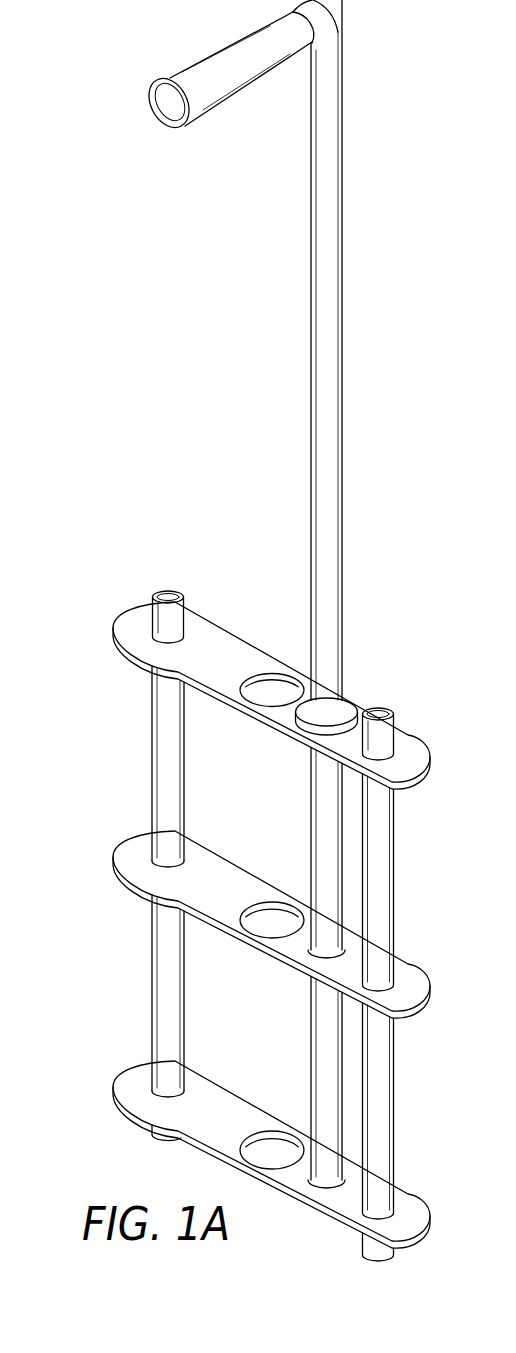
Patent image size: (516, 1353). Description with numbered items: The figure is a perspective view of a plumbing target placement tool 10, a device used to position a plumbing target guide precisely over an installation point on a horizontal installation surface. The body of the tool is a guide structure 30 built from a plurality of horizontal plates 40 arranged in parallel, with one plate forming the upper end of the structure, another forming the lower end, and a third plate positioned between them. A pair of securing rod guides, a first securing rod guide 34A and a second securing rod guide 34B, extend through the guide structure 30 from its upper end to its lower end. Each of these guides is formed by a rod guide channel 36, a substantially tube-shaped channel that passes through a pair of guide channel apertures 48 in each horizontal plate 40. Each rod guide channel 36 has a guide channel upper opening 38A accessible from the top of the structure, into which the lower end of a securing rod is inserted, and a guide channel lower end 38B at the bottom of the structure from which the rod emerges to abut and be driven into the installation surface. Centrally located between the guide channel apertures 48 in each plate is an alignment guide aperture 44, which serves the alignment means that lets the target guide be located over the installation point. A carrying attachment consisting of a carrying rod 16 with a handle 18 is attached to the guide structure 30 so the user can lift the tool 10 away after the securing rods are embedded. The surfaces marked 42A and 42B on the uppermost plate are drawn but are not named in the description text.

The plumbing target placement tool 10 is at (68, 747).
The carrying rod 16 is at (325, 533).
The handle 18 is at (207, 65).
The guide structure 30 is at (122, 603).
The first securing rod guide 34A is at (163, 620).
The second securing rod guide 34B is at (378, 755).
The rod guide channel 36 is at (152, 722).
The guide channel upper opening 38A is at (167, 588).
The guide channel lower end 38B is at (377, 717).
The horizontal plate 40 is at (205, 633).
The upper surface of plate 42A is at (232, 671).
The lower surface of plate 42B is at (254, 740).
The alignment guide aperture 44 is at (267, 680).
The guide channel aperture 48 is at (162, 628).